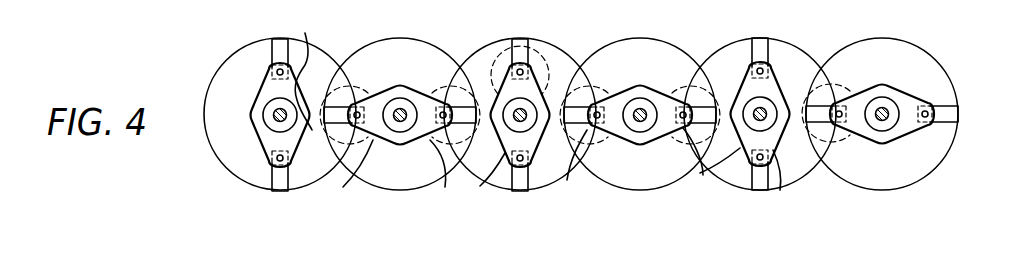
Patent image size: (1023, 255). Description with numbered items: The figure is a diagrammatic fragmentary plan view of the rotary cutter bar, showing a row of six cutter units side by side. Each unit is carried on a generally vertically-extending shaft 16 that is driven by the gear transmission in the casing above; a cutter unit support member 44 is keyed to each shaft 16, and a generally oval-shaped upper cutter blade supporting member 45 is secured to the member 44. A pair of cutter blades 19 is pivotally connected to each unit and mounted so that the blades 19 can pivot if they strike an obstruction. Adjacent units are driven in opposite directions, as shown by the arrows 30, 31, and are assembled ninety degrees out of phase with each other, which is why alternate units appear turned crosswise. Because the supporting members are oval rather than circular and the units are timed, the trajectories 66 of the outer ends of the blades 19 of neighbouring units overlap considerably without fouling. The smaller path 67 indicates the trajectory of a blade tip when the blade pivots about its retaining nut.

The shaft 16 is at (278, 113).
The cutter blade 19 is at (279, 40).
The arrow 30 is at (337, 52).
The arrow 31 is at (347, 52).
The cutter unit support member 44 is at (252, 131).
The upper cutter blade supporting member 45 is at (867, 140).
The trajectory 66 is at (226, 60).
The trajectory 67 is at (361, 88).